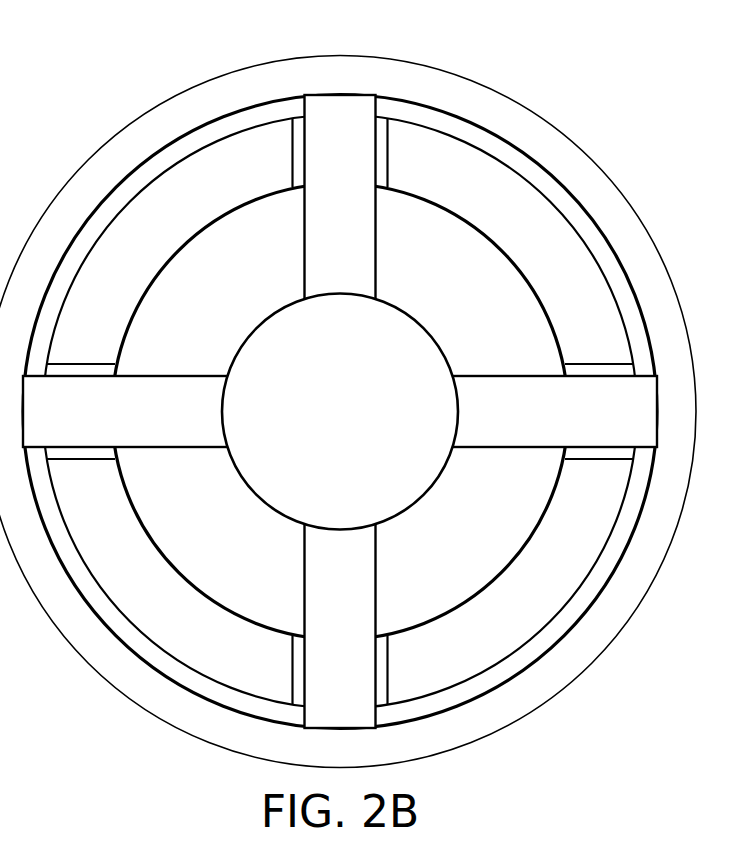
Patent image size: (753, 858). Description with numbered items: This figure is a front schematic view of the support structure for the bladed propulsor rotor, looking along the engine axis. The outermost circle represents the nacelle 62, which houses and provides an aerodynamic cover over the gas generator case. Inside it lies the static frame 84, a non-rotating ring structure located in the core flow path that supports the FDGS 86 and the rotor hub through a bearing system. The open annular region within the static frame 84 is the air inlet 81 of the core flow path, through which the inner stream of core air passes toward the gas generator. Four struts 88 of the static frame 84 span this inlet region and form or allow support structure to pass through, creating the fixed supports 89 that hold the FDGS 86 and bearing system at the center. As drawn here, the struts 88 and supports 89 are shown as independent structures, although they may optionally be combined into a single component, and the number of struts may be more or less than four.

The nacelle 62 is at (207, 80).
The static frame 84 is at (470, 135).
The air inlet 81 is at (572, 580).
The struts 88 is at (600, 362).
The supports 89 is at (495, 450).
The FDGS 86 is at (280, 311).